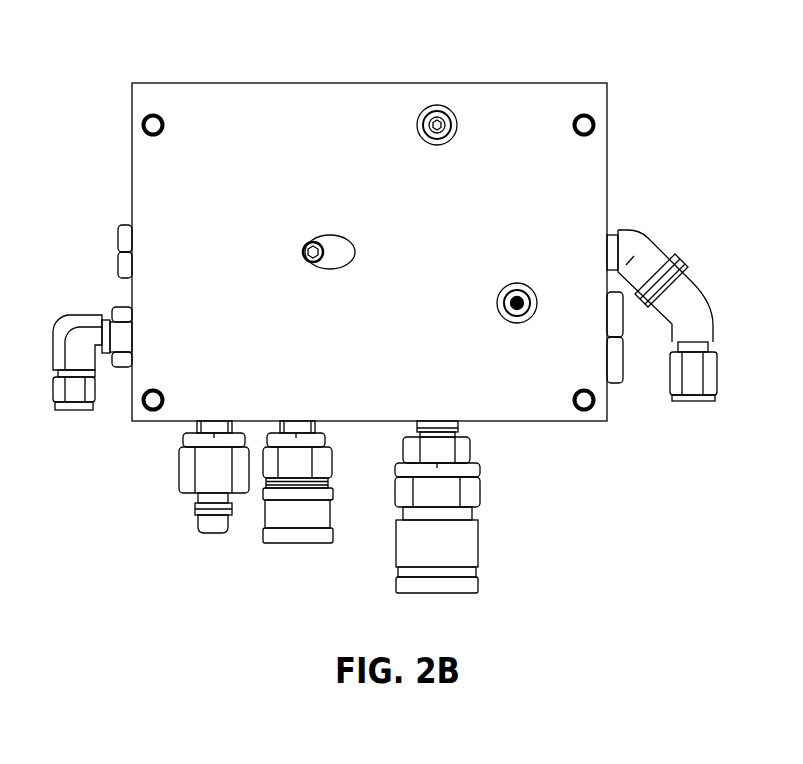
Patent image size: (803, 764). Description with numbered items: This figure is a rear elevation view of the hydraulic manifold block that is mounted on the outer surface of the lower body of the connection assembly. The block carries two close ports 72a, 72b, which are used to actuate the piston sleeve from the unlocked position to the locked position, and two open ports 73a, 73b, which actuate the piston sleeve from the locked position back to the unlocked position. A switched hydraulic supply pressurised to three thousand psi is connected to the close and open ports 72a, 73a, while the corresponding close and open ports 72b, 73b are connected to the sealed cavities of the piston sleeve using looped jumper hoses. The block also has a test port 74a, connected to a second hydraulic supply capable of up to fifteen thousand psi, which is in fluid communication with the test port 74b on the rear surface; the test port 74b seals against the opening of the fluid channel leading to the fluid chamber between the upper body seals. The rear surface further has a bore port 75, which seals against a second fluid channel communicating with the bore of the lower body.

The close port 72a is at (295, 545).
The close port 72b is at (692, 401).
The open port 73a is at (210, 533).
The open port 73b is at (73, 410).
The test port 74a is at (478, 545).
The test port 74b is at (448, 121).
The bore port 75 is at (522, 290).